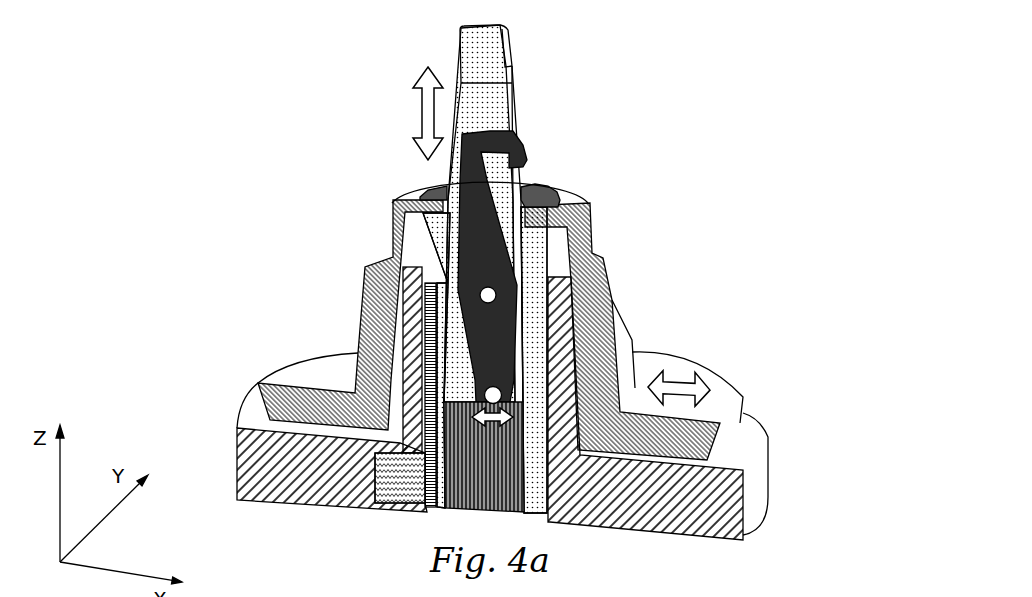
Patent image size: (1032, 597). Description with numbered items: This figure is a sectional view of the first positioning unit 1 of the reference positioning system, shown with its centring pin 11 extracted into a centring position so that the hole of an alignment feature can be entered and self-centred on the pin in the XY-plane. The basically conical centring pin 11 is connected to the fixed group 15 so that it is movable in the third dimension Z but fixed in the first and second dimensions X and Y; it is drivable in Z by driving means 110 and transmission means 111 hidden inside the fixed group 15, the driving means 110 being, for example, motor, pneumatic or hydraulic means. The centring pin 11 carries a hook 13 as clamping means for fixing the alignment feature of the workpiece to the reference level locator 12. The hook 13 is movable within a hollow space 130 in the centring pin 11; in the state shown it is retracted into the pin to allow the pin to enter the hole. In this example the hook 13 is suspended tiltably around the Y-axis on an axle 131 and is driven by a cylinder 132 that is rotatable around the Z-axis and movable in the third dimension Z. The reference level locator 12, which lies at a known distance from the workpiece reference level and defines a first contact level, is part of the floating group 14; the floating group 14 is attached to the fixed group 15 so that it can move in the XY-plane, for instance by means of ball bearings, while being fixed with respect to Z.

The first positioning unit 1 is at (518, 282).
The centring pin 11 is at (403, 54).
The reference level locator 12 is at (626, 175).
The hook 13 is at (659, 250).
The floating group 14 is at (559, 356).
The fixed group 15 is at (548, 408).
The driving means 110 is at (294, 472).
The transmission means 111 is at (293, 360).
The hollow space 130 is at (643, 213).
The axle 131 is at (676, 282).
The cylinder 132 is at (658, 415).